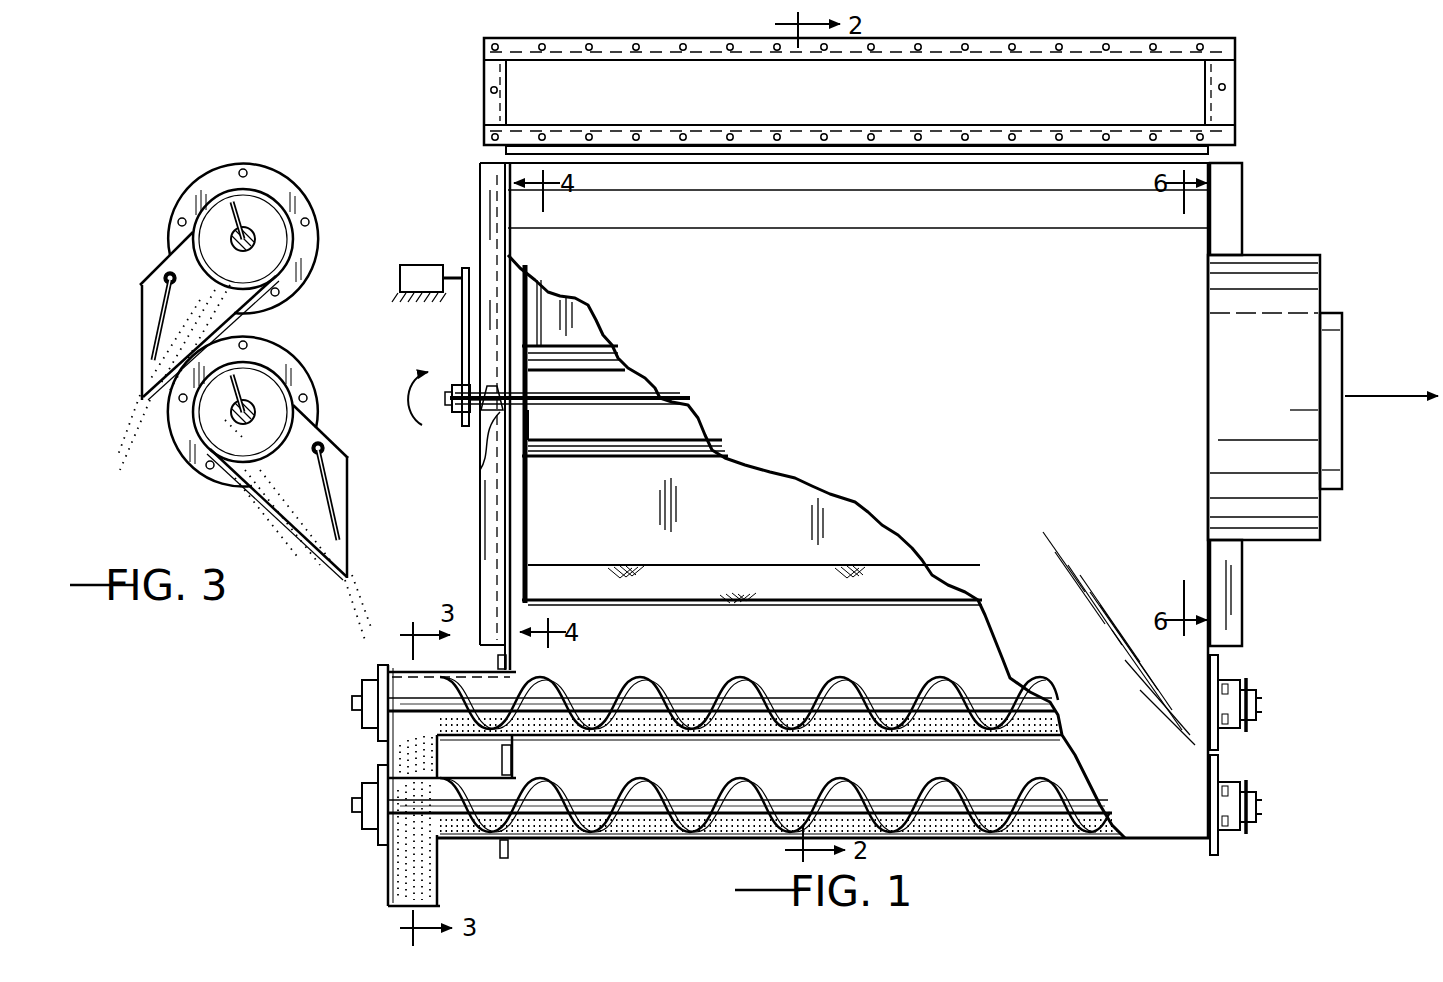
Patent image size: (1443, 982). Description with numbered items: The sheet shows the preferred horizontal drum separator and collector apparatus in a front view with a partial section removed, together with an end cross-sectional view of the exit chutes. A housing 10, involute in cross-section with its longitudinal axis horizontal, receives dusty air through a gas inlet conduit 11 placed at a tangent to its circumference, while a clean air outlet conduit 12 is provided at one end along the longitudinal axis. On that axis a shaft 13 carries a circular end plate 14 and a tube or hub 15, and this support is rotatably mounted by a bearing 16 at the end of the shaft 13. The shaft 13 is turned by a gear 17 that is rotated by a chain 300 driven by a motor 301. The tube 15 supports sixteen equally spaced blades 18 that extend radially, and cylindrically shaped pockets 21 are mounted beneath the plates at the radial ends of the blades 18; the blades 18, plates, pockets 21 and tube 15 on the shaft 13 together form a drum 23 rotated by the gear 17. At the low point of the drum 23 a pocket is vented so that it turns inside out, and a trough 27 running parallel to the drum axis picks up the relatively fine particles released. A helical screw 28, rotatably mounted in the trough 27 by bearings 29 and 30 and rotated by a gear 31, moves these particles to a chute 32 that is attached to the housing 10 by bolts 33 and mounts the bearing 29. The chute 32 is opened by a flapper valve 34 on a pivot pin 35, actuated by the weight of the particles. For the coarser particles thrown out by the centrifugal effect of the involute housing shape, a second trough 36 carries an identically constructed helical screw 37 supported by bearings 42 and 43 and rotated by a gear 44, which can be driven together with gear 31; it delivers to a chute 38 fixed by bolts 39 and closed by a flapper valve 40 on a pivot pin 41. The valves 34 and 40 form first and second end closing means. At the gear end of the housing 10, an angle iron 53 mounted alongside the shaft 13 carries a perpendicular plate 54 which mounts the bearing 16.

In FIG. 1, the housing 10 is at (1195, 213).
In FIG. 1, the gas inlet conduit 11 is at (1226, 102).
In FIG. 1, the clean air outlet conduit 12 is at (1336, 326).
In FIG. 1, the shaft 13 is at (637, 411).
In FIG. 1, the circular end plate 14 is at (528, 414).
In FIG. 1, the tube or hub 15 is at (616, 366).
In FIG. 1, the bearing 16 is at (494, 383).
In FIG. 1, the gear 17 is at (462, 426).
In FIG. 1, the blades 18 is at (614, 524).
In FIG. 1, the cylindrically shaped pockets 21 is at (694, 580).
In FIG. 1, the drum 23 is at (846, 612).
In FIG. 1, the trough 27 is at (843, 739).
In FIG. 1, the helical screw 28 is at (838, 692).
In FIG. 3, the helical screw 28 is at (250, 206).
In FIG. 1, the bearing 29 is at (366, 706).
In FIG. 1, the bearing 30 is at (1232, 681).
In FIG. 1, the gear 31 is at (1246, 732).
In FIG. 1, the chute 32 is at (396, 666).
In FIG. 3, the chute 32 is at (240, 320).
In FIG. 1, the bolts 33 is at (498, 668).
In FIG. 3, the bolts 33 is at (312, 222).
In FIG. 3, the flapper valve 34 is at (158, 318).
In FIG. 3, the pivot pin 35 is at (168, 274).
In FIG. 1, the second trough 36 is at (976, 841).
In FIG. 1, the helical screw 37 is at (928, 790).
In FIG. 3, the helical screw 37 is at (192, 446).
In FIG. 1, the chute 38 is at (470, 843).
In FIG. 3, the chute 38 is at (260, 502).
In FIG. 1, the bolts 39 is at (500, 769).
In FIG. 3, the bolts 39 is at (306, 396).
In FIG. 3, the flapper valve 40 is at (334, 474).
In FIG. 3, the pivot pin 41 is at (319, 444).
In FIG. 1, the bearing 42 is at (362, 822).
In FIG. 1, the bearing 43 is at (1236, 783).
In FIG. 1, the gear 44 is at (1252, 830).
In FIG. 1, the angle iron 53 is at (490, 233).
In FIG. 1, the perpendicular plate 54 is at (488, 446).
In FIG. 1, the chain 300 is at (462, 365).
In FIG. 1, the motor 301 is at (413, 267).